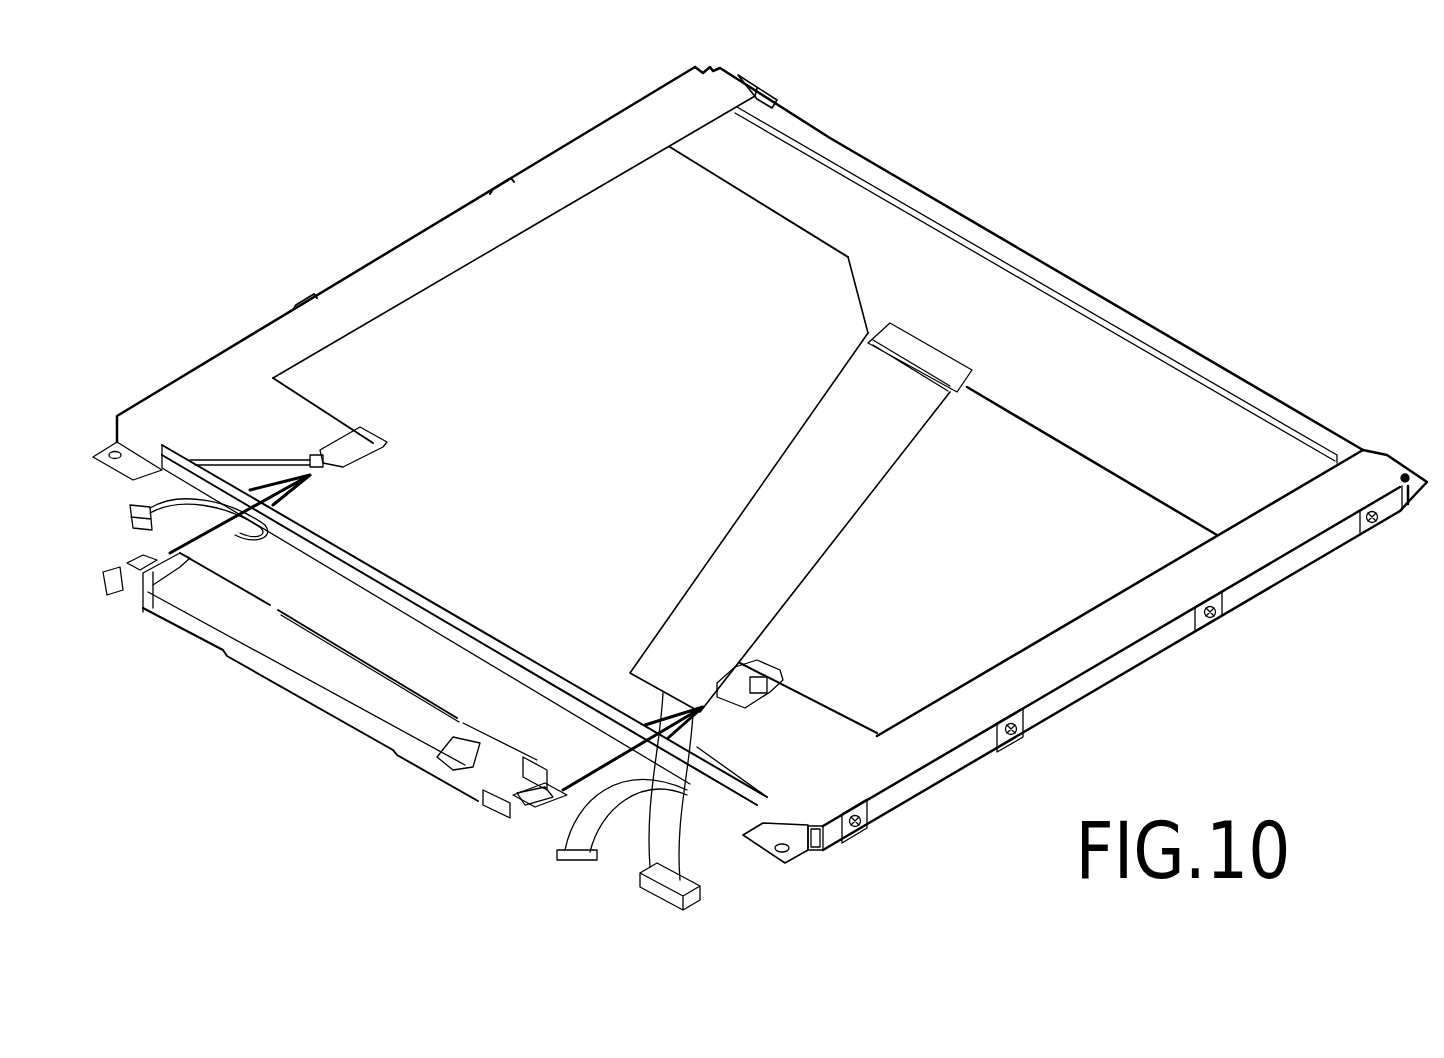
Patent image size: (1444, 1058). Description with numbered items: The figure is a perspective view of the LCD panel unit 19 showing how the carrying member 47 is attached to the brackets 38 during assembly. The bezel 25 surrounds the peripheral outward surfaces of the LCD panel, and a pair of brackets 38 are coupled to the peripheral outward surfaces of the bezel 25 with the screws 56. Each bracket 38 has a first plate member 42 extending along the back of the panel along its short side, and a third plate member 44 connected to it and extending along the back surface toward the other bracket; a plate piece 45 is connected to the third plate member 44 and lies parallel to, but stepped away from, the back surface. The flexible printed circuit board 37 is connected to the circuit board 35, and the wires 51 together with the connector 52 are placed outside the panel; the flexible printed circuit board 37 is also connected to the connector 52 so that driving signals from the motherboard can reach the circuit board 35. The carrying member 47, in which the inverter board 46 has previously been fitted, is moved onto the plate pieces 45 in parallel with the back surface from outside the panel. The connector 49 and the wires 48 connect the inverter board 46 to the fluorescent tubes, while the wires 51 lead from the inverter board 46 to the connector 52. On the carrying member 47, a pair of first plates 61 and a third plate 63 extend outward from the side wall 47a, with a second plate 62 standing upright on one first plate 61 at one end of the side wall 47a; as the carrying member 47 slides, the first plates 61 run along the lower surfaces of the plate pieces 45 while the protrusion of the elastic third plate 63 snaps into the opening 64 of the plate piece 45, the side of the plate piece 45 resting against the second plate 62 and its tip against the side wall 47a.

The LCD panel unit 19 is at (373, 215).
The bezel 25 is at (1038, 264).
The circuit board 35 is at (863, 285).
The flexible printed circuit board 37 is at (830, 533).
The bracket 38 is at (272, 320).
The first plate member 42 is at (438, 219).
The third plate member 44 is at (320, 410).
The plate piece 45 is at (373, 423).
The inverter board 46 is at (360, 675).
The carrying member 47 is at (317, 705).
The side wall 47a is at (160, 573).
The wires 48 is at (262, 533).
The connector 49 is at (135, 505).
The wires 51 is at (670, 850).
The connector 52 is at (707, 887).
The screws 56 is at (1378, 522).
The first plate 61 is at (120, 595).
The second plate 62 is at (510, 813).
The third plate 63 is at (147, 553).
The opening 64 is at (343, 437).